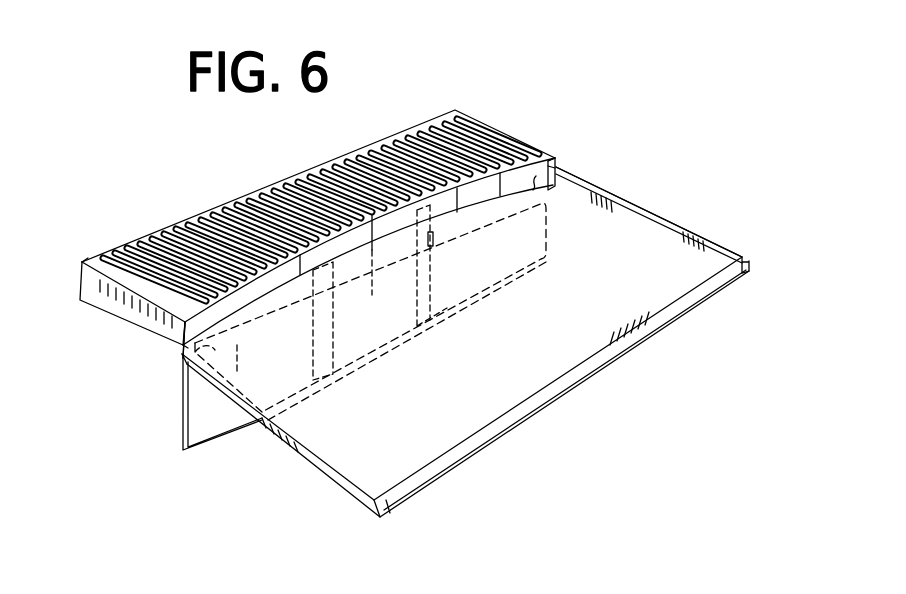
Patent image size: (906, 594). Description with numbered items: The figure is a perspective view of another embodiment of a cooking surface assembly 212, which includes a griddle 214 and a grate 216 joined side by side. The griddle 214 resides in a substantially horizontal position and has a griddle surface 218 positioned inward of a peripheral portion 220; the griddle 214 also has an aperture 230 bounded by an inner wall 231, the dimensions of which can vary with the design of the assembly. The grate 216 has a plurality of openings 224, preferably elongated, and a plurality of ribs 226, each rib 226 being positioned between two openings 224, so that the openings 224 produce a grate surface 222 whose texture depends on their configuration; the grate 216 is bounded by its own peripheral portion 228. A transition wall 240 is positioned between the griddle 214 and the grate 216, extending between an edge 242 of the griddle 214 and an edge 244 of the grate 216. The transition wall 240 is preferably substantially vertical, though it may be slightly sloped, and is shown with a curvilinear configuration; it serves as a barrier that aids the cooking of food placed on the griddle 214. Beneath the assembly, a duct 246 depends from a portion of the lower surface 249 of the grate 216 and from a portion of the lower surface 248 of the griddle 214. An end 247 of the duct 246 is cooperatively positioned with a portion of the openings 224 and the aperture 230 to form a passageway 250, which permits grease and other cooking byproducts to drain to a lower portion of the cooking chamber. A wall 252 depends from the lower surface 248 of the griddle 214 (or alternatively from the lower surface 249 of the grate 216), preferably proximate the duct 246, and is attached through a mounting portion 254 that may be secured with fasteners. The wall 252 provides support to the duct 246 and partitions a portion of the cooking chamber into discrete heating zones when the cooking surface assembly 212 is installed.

The cooking surface assembly 212 is at (692, 155).
The griddle 214 is at (702, 233).
The grate 216 is at (512, 124).
The griddle surface 218 is at (412, 445).
The peripheral portion 220 is at (745, 254).
The grate surface 222 is at (175, 332).
The openings 224 is at (210, 217).
The ribs 226 is at (243, 210).
The peripheral portion 228 is at (97, 273).
The aperture 230 is at (385, 238).
The inner wall 231 is at (432, 246).
The transition wall 240 is at (527, 172).
The edge 242 is at (533, 190).
The edge 244 is at (530, 154).
The duct 246 is at (386, 286).
The end 247 is at (306, 358).
The lower surface 248 is at (340, 494).
The lower surface 249 is at (115, 326).
The passageway 250 is at (356, 330).
The wall 252 is at (210, 425).
The mounting portion 254 is at (230, 347).